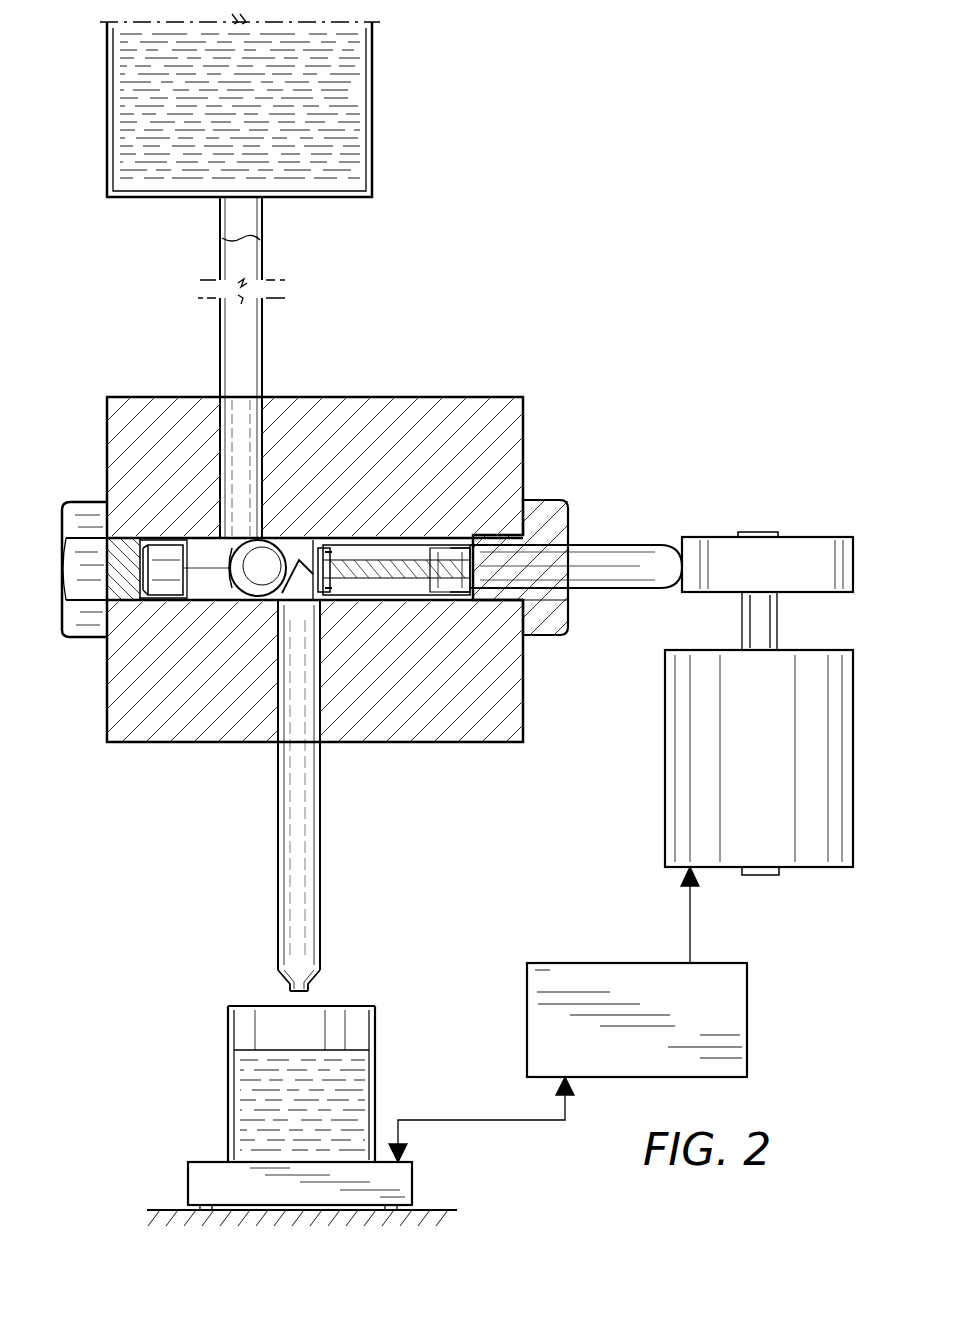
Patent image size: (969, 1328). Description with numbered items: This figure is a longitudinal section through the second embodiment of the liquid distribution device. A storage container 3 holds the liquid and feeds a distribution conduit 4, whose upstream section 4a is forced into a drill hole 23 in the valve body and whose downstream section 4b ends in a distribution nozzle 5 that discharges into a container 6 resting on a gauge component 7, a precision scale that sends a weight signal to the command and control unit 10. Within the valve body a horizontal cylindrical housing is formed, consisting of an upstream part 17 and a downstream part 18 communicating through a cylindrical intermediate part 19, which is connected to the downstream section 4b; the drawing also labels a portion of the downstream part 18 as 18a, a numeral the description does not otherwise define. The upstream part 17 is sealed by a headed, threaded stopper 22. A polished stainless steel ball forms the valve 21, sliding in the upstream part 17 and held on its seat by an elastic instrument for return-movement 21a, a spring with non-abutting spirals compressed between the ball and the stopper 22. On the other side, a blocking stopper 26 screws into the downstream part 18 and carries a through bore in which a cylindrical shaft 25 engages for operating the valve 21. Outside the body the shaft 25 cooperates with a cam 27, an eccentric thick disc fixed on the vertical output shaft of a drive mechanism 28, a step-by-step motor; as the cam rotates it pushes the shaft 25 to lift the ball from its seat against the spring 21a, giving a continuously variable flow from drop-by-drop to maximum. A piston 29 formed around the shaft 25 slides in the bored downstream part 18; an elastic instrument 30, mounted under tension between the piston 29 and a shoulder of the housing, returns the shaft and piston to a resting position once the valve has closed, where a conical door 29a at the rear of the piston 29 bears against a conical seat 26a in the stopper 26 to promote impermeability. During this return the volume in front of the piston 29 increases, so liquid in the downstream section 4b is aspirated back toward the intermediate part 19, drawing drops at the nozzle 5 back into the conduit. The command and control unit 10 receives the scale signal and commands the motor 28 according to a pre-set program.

The storage container 3 is at (355, 128).
The distribution conduit 4 is at (320, 890).
The upstream section of the conduit 4a is at (222, 360).
The downstream section of the conduit 4b is at (279, 830).
The distribution nozzle 5 is at (290, 990).
The container 6 is at (375, 1078).
The gauge component 7 is at (413, 1175).
The command and control unit 10 is at (738, 1008).
The upstream part of the housing 17 is at (190, 548).
The downstream part of the housing 18 is at (415, 545).
The piston head 18a is at (330, 540).
The intermediate part of the housing 19 is at (316, 540).
The valve 21 is at (240, 548).
The elastic instrument for return-movement 21a is at (240, 600).
The stopper 22 is at (83, 632).
The drill hole 23 is at (237, 470).
The cylindrical shaft 25 is at (390, 545).
The blocking stopper 26 is at (562, 545).
The conical seat 26a is at (505, 535).
The cam 27 is at (795, 545).
The drive mechanism 28 is at (667, 795).
The piston 29 is at (440, 545).
The conical door 29a is at (565, 632).
The elastic instrument 30 is at (450, 590).